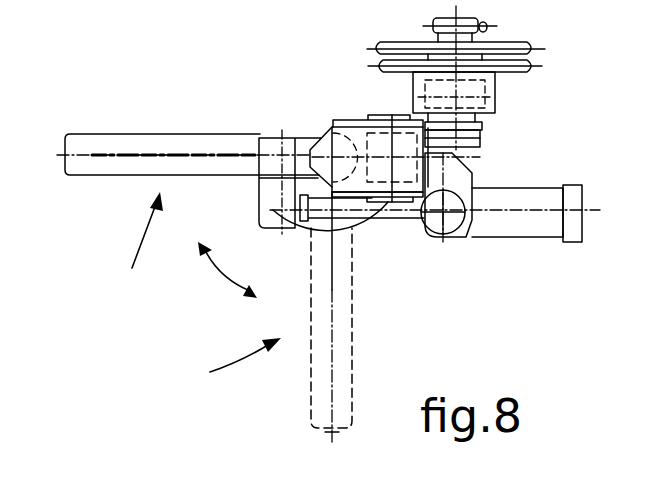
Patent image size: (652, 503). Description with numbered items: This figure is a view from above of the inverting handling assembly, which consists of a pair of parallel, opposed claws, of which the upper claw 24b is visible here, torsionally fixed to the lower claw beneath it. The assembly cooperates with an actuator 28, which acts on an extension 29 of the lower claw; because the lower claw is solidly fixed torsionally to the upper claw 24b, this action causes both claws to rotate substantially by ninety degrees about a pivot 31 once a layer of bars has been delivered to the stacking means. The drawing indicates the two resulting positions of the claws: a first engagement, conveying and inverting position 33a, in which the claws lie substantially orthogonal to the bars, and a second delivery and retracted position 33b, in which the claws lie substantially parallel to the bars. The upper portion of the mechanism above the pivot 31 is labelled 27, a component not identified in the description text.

The upper claw 24b is at (137, 145).
The adjusting knob assembly 27 is at (340, 75).
The actuator 28 is at (545, 200).
The extension 29 is at (465, 232).
The pivot 31 is at (327, 147).
The first engagement, conveying and inverting position 33a is at (135, 248).
The second delivery and retracted position 33b is at (214, 364).